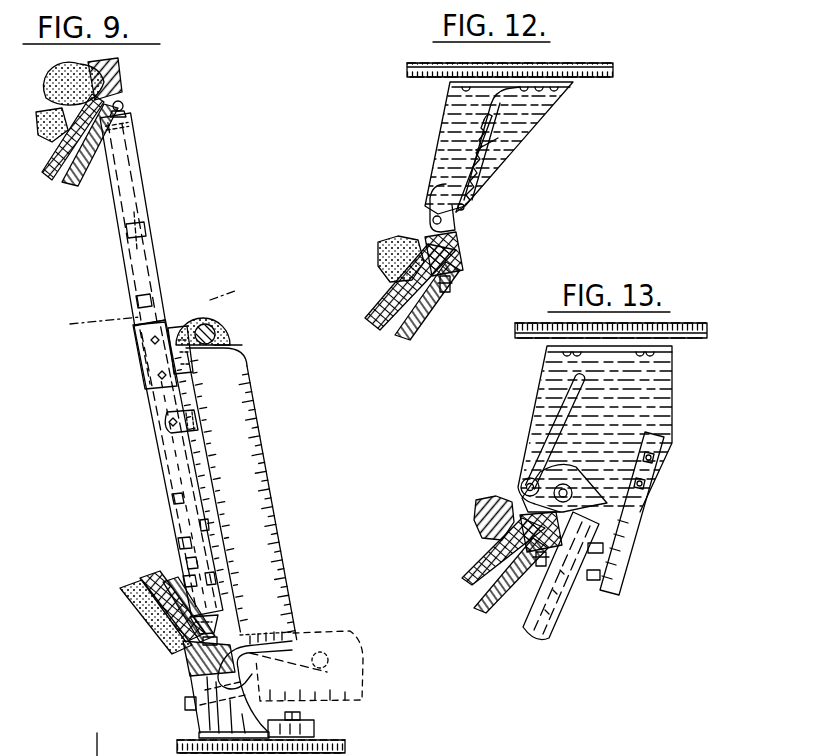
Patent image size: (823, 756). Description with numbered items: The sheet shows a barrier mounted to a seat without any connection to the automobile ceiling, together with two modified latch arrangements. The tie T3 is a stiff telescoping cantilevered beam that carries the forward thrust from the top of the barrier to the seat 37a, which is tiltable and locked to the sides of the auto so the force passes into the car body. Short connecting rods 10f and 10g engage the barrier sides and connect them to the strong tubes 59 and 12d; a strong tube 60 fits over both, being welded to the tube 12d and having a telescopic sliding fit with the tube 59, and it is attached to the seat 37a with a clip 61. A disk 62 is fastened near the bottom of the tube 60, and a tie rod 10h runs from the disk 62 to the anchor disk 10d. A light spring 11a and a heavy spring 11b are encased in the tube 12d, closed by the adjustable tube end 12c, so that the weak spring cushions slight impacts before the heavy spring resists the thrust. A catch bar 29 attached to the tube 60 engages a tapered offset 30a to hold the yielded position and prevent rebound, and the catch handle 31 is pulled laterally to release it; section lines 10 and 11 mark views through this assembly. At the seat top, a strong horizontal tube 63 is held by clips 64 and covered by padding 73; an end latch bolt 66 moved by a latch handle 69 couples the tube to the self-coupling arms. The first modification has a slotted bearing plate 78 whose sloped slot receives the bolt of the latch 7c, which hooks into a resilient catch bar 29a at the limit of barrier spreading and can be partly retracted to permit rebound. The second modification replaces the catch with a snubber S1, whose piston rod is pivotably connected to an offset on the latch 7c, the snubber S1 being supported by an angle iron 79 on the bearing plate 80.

In FIG. 9, the short connecting rod 10f is at (124, 108).
In FIG. 9, the tube 59 is at (136, 156).
In FIG. 9, the catch bar 29 is at (147, 240).
In FIG. 9, the tie T3 is at (158, 192).
In FIG. 9, the catch handle 31 is at (126, 228).
In FIG. 9, the section line 10- 10 is at (78, 318).
In FIG. 9, the tapered offset 30a is at (138, 301).
In FIG. 9, the horizontal tube 63 is at (163, 313).
In FIG. 9, the tube 60 is at (167, 503).
In FIG. 9, the disk 62 is at (198, 471).
In FIG. 9, the latch handle 69 is at (213, 313).
In FIG. 9, the end latch bolt 66 is at (215, 338).
In FIG. 9, the padding 73 is at (228, 329).
In FIG. 9, the clip 64 is at (191, 373).
In FIG. 9, the clip 61 is at (164, 419).
In FIG. 9, the seat 37a is at (267, 463).
In FIG. 9, the adjustable tube end 12c is at (215, 498).
In FIG. 9, the tie rod 10h is at (215, 527).
In FIG. 9, the heavy spring 11b is at (177, 544).
In FIG. 9, the tube 12d is at (211, 565).
In FIG. 9, the light spring 11a is at (181, 576).
In FIG. 9, the anchor disk 10d is at (229, 577).
In FIG. 9, the short connecting rod 10g is at (218, 627).
In FIG. 9, the section line 11- 11 is at (127, 740).
In FIG. 12, the slotted bearing plate 78 is at (543, 116).
In FIG. 12, the resilient catch bar 29a is at (491, 152).
In FIG. 12, the latch 7c is at (457, 231).
In FIG. 13, the latch 7c is at (518, 502).
In FIG. 13, the bearing plate 80 is at (673, 405).
In FIG. 13, the angle iron 79 is at (626, 543).
In FIG. 13, the snubber S1 is at (576, 606).